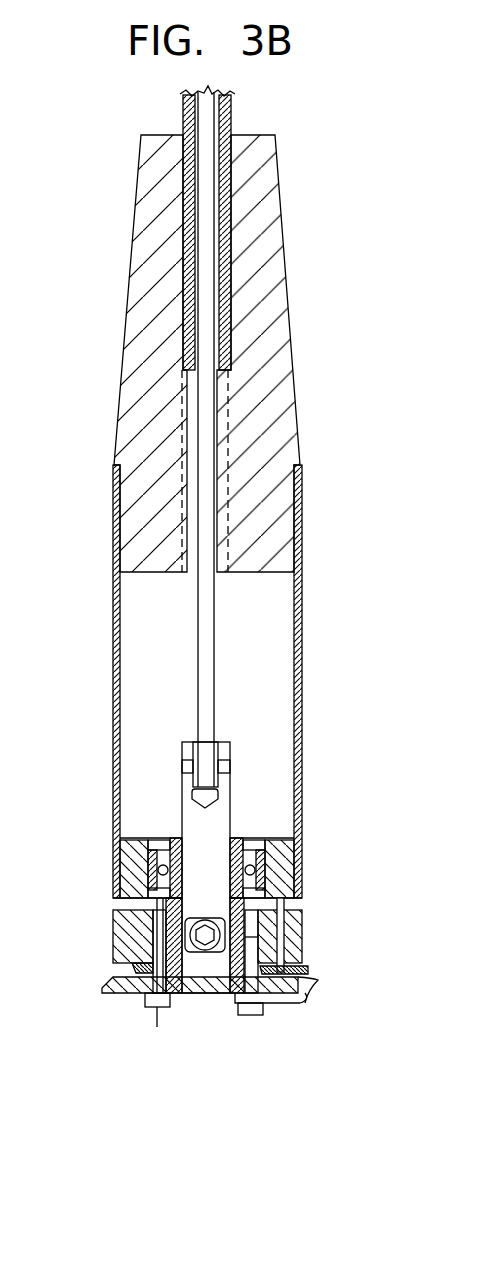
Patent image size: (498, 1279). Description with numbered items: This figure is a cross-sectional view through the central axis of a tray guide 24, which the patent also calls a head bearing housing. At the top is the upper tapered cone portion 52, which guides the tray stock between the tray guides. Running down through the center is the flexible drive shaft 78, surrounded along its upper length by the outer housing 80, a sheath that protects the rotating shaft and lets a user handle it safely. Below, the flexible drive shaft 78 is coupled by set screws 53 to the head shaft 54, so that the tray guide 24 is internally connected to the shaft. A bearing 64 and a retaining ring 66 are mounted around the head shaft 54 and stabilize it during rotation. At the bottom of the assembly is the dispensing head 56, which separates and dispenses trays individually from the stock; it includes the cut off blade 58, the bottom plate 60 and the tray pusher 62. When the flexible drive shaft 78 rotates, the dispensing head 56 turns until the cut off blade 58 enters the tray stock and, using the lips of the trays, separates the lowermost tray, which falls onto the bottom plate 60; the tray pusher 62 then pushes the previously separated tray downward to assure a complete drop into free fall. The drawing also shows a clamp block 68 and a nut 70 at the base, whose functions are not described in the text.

The tray guide 24 is at (113, 558).
The upper tapered cone portion 52 is at (135, 332).
The set screws 53 is at (230, 766).
The head shaft 54 is at (218, 817).
The dispensing head 56 is at (117, 934).
The cut off blade 58 is at (132, 968).
The bottom plate 60 is at (125, 997).
The tray pusher 62 is at (297, 1003).
The bearing 64 is at (125, 862).
The retaining ring 66 is at (147, 888).
The clamp block 68 is at (283, 943).
The nut 70 is at (250, 1015).
The flexible drive shaft 78 is at (205, 241).
The outer housing 80 is at (185, 193).